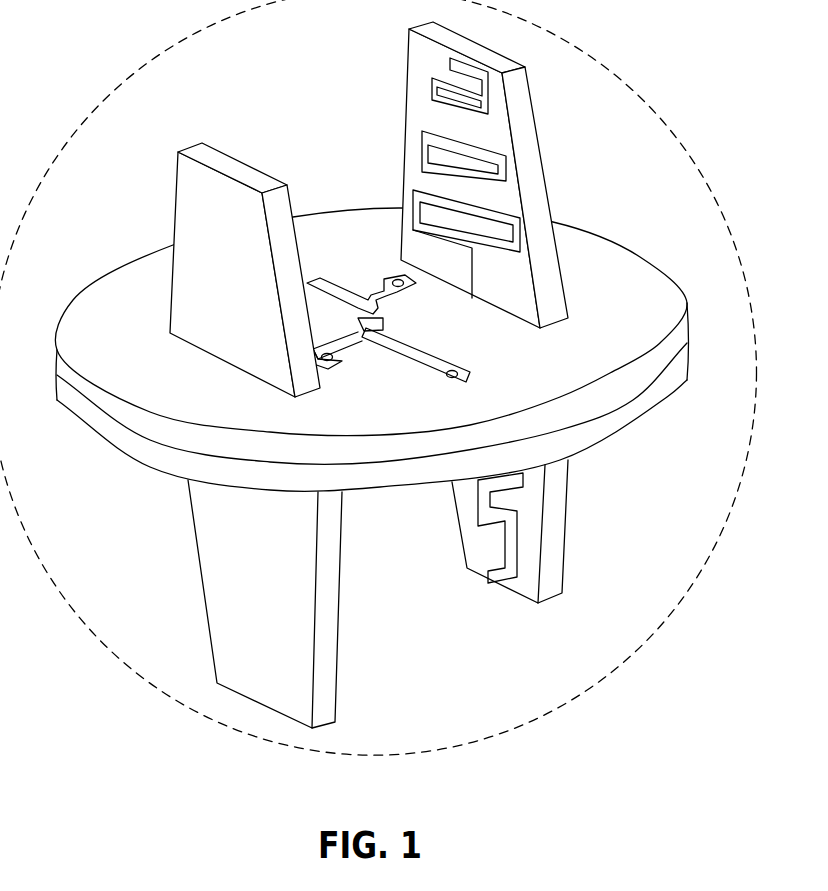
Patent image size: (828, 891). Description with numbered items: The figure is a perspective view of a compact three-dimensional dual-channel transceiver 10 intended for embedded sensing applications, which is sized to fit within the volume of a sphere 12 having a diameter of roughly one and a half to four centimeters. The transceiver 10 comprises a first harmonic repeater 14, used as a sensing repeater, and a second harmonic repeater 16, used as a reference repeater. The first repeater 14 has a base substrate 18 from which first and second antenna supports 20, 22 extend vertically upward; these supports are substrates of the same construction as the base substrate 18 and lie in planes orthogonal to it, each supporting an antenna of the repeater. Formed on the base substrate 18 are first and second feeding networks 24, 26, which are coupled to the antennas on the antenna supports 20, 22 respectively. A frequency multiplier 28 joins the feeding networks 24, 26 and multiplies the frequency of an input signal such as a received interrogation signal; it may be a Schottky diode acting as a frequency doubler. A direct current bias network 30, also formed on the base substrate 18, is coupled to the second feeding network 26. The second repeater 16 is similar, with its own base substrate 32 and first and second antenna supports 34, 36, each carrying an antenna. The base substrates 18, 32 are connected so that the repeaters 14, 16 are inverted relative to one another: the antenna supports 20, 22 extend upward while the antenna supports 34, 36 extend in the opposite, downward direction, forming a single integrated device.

The dual-channel transceiver 10 is at (377, 372).
The sphere 12 is at (518, 32).
The first harmonic repeater 14 is at (366, 207).
The second harmonic repeater 16 is at (437, 594).
The base substrate 18 is at (377, 349).
The first antenna support 20 is at (384, 45).
The second antenna support 22 is at (157, 163).
The first feeding network 24 is at (361, 261).
The second feeding network 26 is at (368, 371).
The frequency multiplier 28 is at (378, 325).
The direct current (DC) bias network 30 is at (466, 353).
The base substrate 32 is at (667, 393).
The first antenna support 34 is at (360, 692).
The second antenna support 36 is at (471, 595).